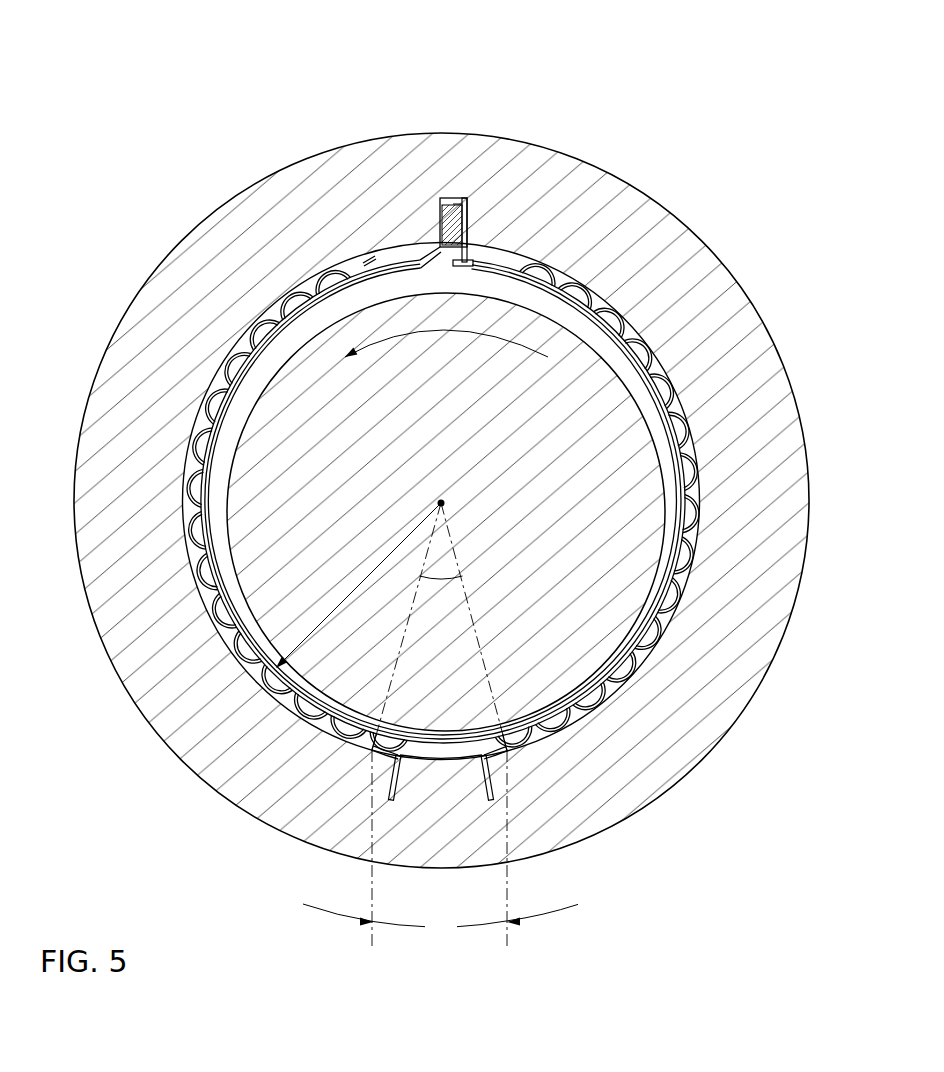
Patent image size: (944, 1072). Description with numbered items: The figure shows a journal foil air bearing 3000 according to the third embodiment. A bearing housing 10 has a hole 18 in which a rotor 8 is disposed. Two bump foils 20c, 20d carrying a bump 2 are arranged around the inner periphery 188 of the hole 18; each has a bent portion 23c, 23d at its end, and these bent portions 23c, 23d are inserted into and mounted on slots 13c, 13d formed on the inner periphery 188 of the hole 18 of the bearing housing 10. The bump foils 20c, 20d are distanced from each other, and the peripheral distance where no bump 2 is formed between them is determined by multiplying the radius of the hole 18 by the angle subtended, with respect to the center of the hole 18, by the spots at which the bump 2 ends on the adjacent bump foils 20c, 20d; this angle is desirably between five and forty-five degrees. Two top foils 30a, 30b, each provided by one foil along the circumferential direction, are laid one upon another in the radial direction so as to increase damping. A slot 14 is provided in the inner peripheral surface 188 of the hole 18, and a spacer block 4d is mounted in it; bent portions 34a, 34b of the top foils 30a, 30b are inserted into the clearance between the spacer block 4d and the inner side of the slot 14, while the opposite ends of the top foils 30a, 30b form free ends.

The journal foil air bearing 3000 is at (195, 27).
The inner periphery of the hole 188 is at (383, 254).
The spacer block 4d is at (445, 223).
The slot 14 is at (448, 198).
The bent portion of top foil 34b is at (467, 217).
The bent portion of top foil 34a is at (468, 232).
The hole 18 is at (552, 300).
The bearing housing 10 is at (686, 250).
The rotor 8 is at (292, 370).
The top foil 30b is at (237, 568).
The top foil 30a is at (243, 628).
The bump foil 20d is at (300, 742).
The bump foil 20c is at (688, 620).
The bump 2 is at (595, 702).
The bent portion of bump foil 23d is at (390, 783).
The slot 13d is at (393, 806).
The slot 13c is at (487, 806).
The bent portion of bump foil 23c is at (492, 783).